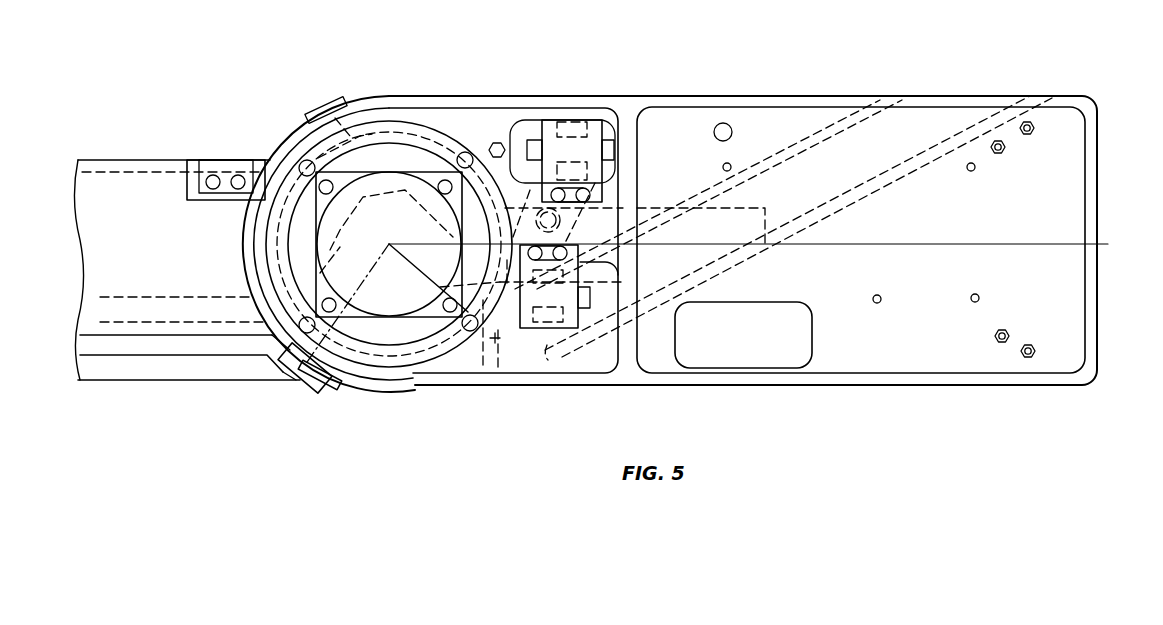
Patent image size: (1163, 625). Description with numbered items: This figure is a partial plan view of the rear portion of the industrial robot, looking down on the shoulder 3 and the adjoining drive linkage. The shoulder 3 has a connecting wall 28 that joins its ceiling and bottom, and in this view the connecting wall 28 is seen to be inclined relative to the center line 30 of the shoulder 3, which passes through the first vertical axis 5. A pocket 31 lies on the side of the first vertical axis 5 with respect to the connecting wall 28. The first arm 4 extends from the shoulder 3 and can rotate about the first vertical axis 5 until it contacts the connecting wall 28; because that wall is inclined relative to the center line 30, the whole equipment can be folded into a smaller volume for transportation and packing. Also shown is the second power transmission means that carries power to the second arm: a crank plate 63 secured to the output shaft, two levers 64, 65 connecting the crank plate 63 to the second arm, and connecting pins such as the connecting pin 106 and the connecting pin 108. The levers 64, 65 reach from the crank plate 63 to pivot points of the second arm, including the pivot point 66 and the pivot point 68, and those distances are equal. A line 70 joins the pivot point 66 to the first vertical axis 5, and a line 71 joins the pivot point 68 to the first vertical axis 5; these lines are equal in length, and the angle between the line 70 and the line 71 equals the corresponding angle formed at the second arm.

The shoulder 3 is at (1073, 181).
The first arm 4 is at (153, 160).
The first vertical axis 5 is at (388, 243).
The connecting wall 28 is at (904, 170).
The center line 30 is at (1020, 244).
The pocket 31 is at (760, 120).
The crank plate 63 is at (437, 382).
The lever 64 is at (190, 307).
The lever 65 is at (170, 381).
The pivot point 66 is at (466, 240).
The pivot point 68 is at (310, 382).
The line 70 is at (428, 260).
The line 71 is at (358, 262).
The connecting pin 106 is at (477, 381).
The connecting pin 108 is at (307, 381).